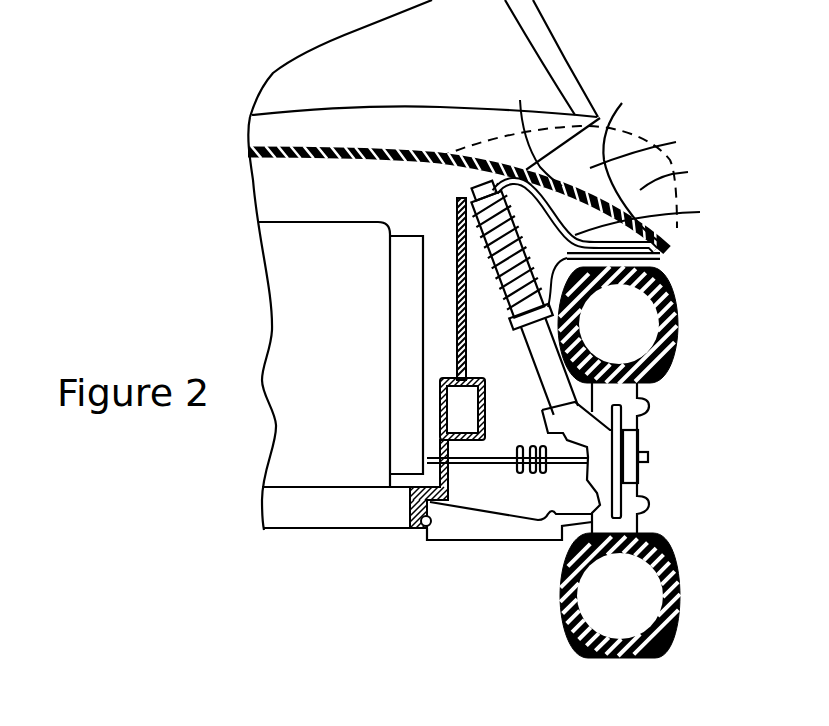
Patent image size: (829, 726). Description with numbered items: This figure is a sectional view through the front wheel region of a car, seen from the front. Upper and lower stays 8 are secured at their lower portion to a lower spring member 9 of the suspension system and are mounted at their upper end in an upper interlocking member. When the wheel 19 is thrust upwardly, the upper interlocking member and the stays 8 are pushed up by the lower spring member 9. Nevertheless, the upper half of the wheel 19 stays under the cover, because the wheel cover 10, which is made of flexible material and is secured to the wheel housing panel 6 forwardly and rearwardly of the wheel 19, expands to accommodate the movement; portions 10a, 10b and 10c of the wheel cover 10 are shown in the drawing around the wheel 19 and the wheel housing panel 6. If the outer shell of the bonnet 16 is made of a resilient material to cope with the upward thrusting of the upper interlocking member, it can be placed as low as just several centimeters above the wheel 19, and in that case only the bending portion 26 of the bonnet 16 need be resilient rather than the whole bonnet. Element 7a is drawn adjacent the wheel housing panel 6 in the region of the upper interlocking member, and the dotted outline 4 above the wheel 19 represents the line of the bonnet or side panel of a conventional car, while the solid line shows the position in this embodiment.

The cover outline 4 is at (668, 150).
The bending portion 26 is at (450, 152).
The bonnet 16 is at (635, 162).
The bracket upper portion 10b is at (529, 131).
The bracket portion 10a is at (685, 175).
The wheel cover 10 is at (612, 215).
The bracket flange 10c is at (660, 257).
The wheel housing panel 6 is at (457, 212).
The body panel 7a is at (577, 245).
The upper and lower stays 8 is at (538, 283).
The lower spring member 9 is at (540, 338).
The wheel 19 is at (678, 598).